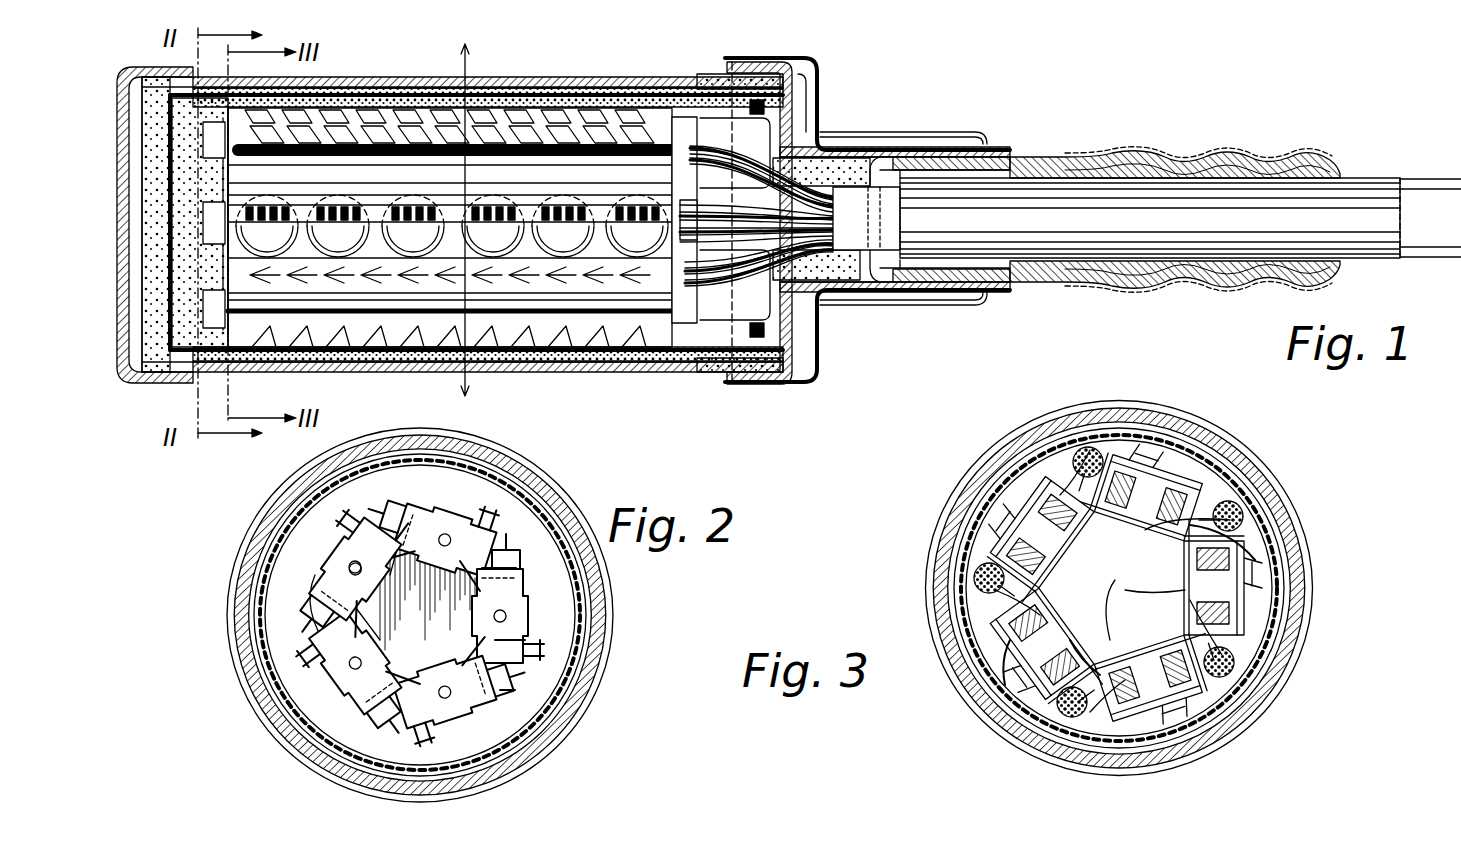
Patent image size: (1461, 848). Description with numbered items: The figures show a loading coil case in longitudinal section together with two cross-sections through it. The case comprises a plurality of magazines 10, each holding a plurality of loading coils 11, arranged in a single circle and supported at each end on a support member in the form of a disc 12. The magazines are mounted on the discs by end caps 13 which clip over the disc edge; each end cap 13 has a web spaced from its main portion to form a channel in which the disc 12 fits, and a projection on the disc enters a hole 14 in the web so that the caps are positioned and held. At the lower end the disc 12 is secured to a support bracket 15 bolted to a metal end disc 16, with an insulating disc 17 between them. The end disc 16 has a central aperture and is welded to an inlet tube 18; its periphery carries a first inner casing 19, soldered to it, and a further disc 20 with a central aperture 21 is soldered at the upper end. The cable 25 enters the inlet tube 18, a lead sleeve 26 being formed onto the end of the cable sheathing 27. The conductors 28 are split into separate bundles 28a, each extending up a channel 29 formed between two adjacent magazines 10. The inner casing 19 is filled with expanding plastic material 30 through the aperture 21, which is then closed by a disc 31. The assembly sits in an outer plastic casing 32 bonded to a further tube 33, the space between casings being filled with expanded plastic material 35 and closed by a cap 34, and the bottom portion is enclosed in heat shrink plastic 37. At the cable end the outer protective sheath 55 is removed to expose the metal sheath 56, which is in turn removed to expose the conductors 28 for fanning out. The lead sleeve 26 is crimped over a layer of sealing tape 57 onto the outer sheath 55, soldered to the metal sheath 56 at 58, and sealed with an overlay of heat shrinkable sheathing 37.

In FIG. 1, the magazine 10 is at (600, 200).
In FIG. 2, the magazine 10 is at (540, 600).
In FIG. 3, the magazine 10 is at (1150, 600).
In FIG. 1, the loading coil 11 is at (560, 300).
In FIG. 3, the loading coil 11 is at (1235, 550).
In FIG. 1, the disc 12 is at (210, 258).
In FIG. 2, the disc 12 is at (397, 610).
In FIG. 3, the disc 12 is at (1145, 610).
In FIG. 1, the end cap 13 is at (203, 135).
In FIG. 2, the end cap 13 is at (515, 645).
In FIG. 2, the hole 14 is at (358, 558).
In FIG. 1, the support bracket 15 is at (795, 108).
In FIG. 1, the metal end disc 16 is at (810, 78).
In FIG. 1, the insulating disc 17 is at (792, 332).
In FIG. 1, the inlet tube 18 is at (872, 148).
In FIG. 1, the first inner casing 19 is at (548, 100).
In FIG. 2, the first inner casing 19 is at (575, 662).
In FIG. 3, the first inner casing 19 is at (990, 520).
In FIG. 1, the further disc 20 is at (170, 105).
In FIG. 1, the central aperture 21 is at (168, 232).
In FIG. 1, the cable 25 is at (1460, 175).
In FIG. 1, the lead sleeve 26 is at (1143, 150).
In FIG. 1, the cable sheathing 27 is at (1150, 218).
In FIG. 1, the conductors 28 is at (830, 262).
In FIG. 1, the bundles 28a is at (560, 205).
In FIG. 3, the bundles 28a is at (1095, 455).
In FIG. 3, the channel 29 is at (1150, 440).
In FIG. 1, the expanding plastic material 30 is at (498, 96).
In FIG. 1, the disc 31 is at (150, 210).
In FIG. 1, the outer plastic casing 32 is at (412, 94).
In FIG. 2, the outer plastic casing 32 is at (596, 600).
In FIG. 3, the outer plastic casing 32 is at (990, 442).
In FIG. 1, the further tube 33 is at (955, 120).
In FIG. 1, the cap 34 is at (132, 70).
In FIG. 1, the expanded plastic material 35 is at (150, 383).
In FIG. 1, the heat shrink plastic tube 37 is at (778, 60).
In FIG. 2, the heat shrink plastic tube 37 is at (236, 558).
In FIG. 3, the heat shrink plastic tube 37 is at (948, 482).
In FIG. 1, the outer protective sheath 55 is at (975, 284).
In FIG. 1, the metal sheath 56 is at (920, 272).
In FIG. 1, the sealing tape 57 is at (1245, 150).
In FIG. 1, the solder joint 58 is at (872, 252).